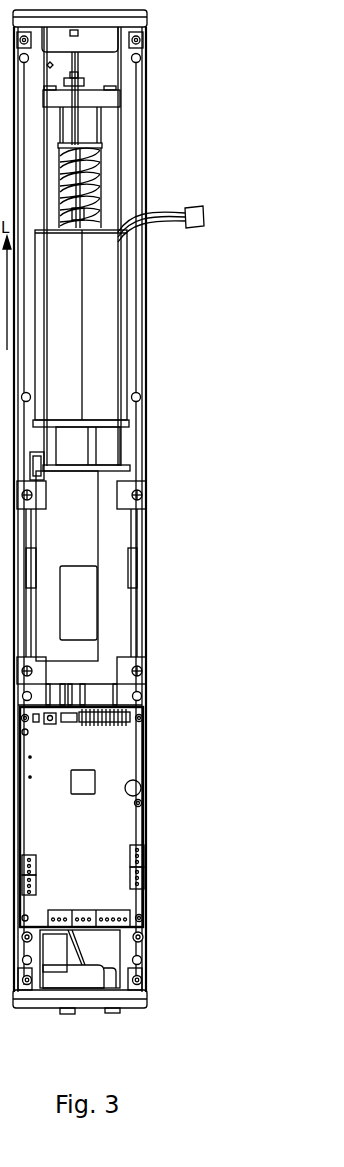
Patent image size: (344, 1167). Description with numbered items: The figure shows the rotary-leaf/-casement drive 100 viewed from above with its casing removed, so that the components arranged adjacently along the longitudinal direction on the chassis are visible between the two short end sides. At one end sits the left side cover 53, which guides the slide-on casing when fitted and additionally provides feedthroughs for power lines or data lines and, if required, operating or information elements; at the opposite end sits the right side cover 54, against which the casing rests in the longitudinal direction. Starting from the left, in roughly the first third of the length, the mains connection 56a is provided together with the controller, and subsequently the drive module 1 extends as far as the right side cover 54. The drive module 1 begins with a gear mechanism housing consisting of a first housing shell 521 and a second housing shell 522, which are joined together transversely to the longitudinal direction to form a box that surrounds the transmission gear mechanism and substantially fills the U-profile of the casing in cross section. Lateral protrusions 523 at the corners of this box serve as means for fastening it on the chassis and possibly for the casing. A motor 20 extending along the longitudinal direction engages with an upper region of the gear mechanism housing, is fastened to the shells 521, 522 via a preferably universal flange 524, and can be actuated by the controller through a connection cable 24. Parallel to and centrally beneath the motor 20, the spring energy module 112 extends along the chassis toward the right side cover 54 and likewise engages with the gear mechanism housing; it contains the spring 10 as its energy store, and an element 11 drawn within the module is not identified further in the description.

The drive module 1 is at (152, 455).
The right side cover 54 is at (114, 36).
The lead screw nut 11 is at (82, 78).
The spring energy module 112 is at (122, 123).
The spring 10 is at (83, 173).
The connection cable 24 is at (185, 211).
The motor 20 is at (100, 290).
The flange 524 is at (45, 422).
The first housing shell 521 is at (110, 602).
The second housing shell 522 is at (48, 617).
The lateral protrusions 523 is at (140, 668).
The left side cover 53 is at (24, 947).
The mains connection 56a is at (82, 967).
The rotary-leaf/-casement drive 100 is at (158, 936).